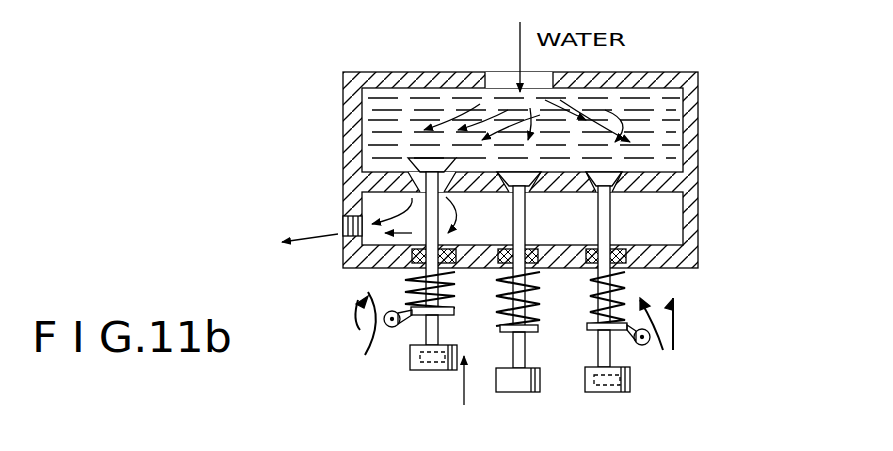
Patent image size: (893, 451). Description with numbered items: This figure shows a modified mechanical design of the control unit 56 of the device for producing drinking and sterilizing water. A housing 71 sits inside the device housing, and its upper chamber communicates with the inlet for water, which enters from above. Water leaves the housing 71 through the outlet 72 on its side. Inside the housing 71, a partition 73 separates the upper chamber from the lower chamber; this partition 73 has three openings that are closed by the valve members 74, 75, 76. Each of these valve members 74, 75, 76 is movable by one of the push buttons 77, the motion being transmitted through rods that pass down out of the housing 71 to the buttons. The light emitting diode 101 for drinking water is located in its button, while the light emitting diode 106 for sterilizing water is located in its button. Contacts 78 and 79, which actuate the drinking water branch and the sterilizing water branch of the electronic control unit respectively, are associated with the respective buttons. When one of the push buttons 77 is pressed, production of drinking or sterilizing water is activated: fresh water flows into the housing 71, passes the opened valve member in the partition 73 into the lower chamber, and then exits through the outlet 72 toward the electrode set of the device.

The unit 56 is at (682, 46).
The housing 71 is at (650, 210).
The outlet 72 is at (345, 222).
The partition 73 is at (372, 152).
The valve member 74 is at (420, 158).
The valve member 75 is at (533, 172).
The valve member 76 is at (614, 170).
The push button 77 is at (410, 358).
The contact 78 is at (362, 318).
The contact 79 is at (678, 322).
The light emitting diode 101 is at (430, 360).
The light emitting diode 106 is at (608, 392).